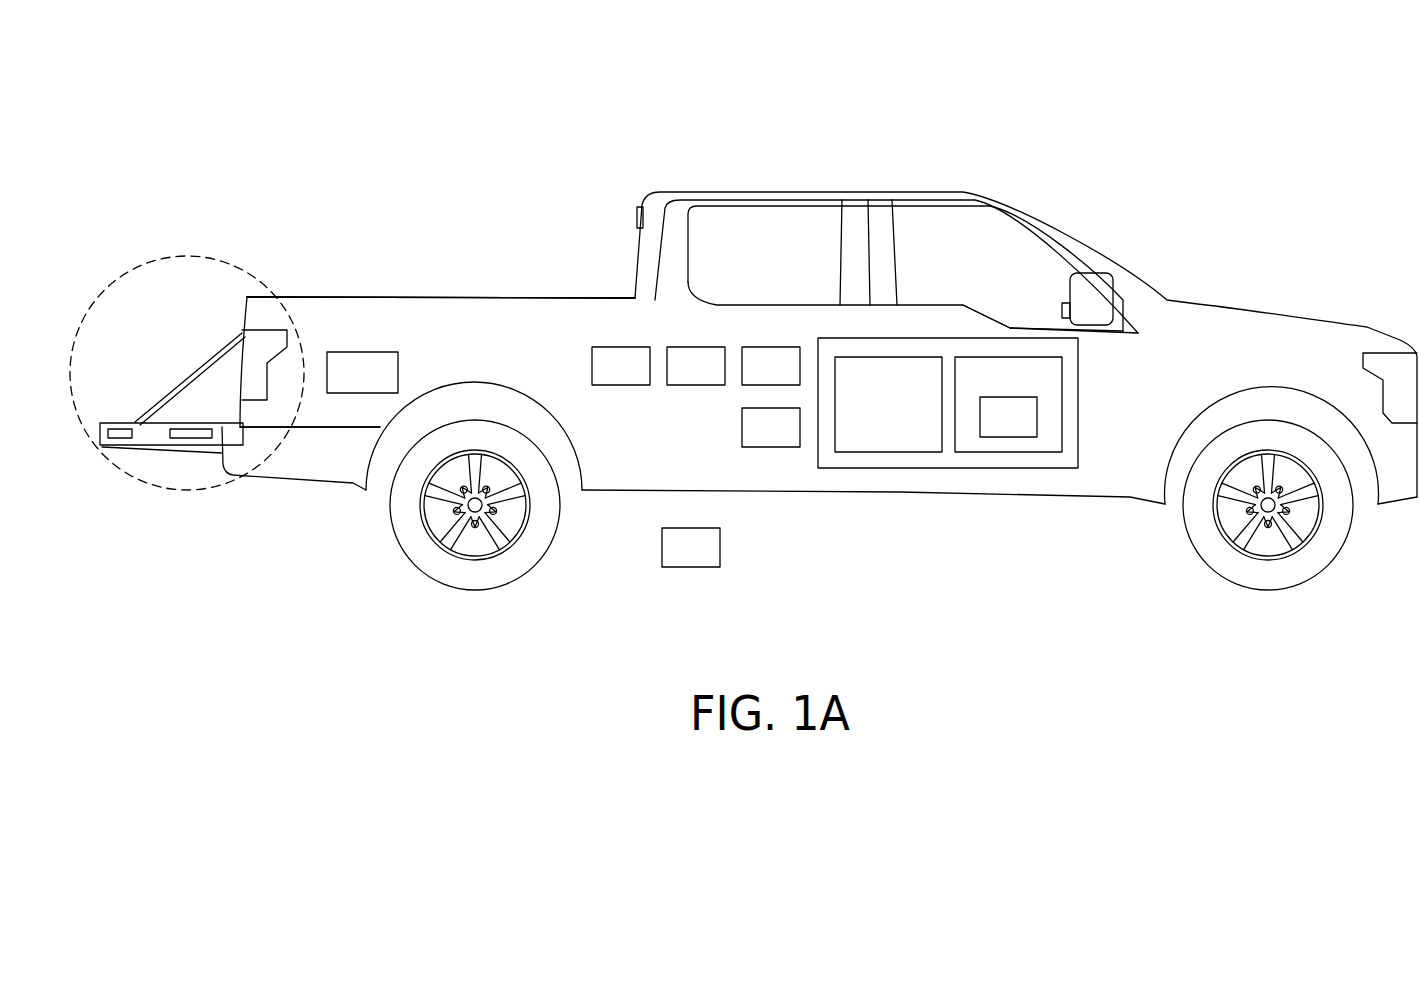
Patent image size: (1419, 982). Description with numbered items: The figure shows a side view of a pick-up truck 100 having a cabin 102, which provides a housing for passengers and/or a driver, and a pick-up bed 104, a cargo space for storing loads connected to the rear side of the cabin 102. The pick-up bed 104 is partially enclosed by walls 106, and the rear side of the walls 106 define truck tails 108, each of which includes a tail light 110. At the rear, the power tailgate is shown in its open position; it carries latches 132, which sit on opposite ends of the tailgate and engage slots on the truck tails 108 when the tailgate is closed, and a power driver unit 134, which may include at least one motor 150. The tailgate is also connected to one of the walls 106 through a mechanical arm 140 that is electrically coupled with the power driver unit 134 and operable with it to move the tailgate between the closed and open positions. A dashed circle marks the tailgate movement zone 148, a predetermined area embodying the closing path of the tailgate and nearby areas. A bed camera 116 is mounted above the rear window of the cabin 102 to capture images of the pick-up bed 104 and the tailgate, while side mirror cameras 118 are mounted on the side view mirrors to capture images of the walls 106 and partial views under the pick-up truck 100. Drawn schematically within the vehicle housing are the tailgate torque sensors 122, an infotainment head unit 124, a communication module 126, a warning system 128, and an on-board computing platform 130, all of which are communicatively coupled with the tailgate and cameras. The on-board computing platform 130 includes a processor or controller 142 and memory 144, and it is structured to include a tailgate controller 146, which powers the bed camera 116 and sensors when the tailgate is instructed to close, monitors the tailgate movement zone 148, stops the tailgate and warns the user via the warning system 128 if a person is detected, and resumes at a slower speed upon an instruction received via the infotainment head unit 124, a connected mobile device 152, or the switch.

The pick-up truck 100 is at (1173, 115).
The cabin 102 is at (1033, 207).
The pick-up bed 104 is at (443, 268).
The walls 106 is at (327, 297).
The truck tails 108 is at (244, 280).
The tail light 110 is at (253, 367).
The bed camera 116 is at (635, 218).
The side mirror cameras 118 is at (1060, 312).
The tailgate torque sensors 122 is at (602, 379).
The infotainment head unit 124 is at (677, 379).
The communication module 126 is at (752, 379).
The warning system 128 is at (752, 440).
The on-board computing platform 130 is at (941, 452).
The latches 132 is at (118, 438).
The power driver unit 134 is at (193, 438).
The mechanical arm 140 is at (175, 387).
The processor or controller 142 is at (888, 452).
The memory 144 is at (1008, 461).
The tailgate controller 146 is at (1008, 417).
The tailgate movement zone 148 is at (140, 265).
The motor 150 is at (343, 385).
The mobile device 152 is at (672, 561).